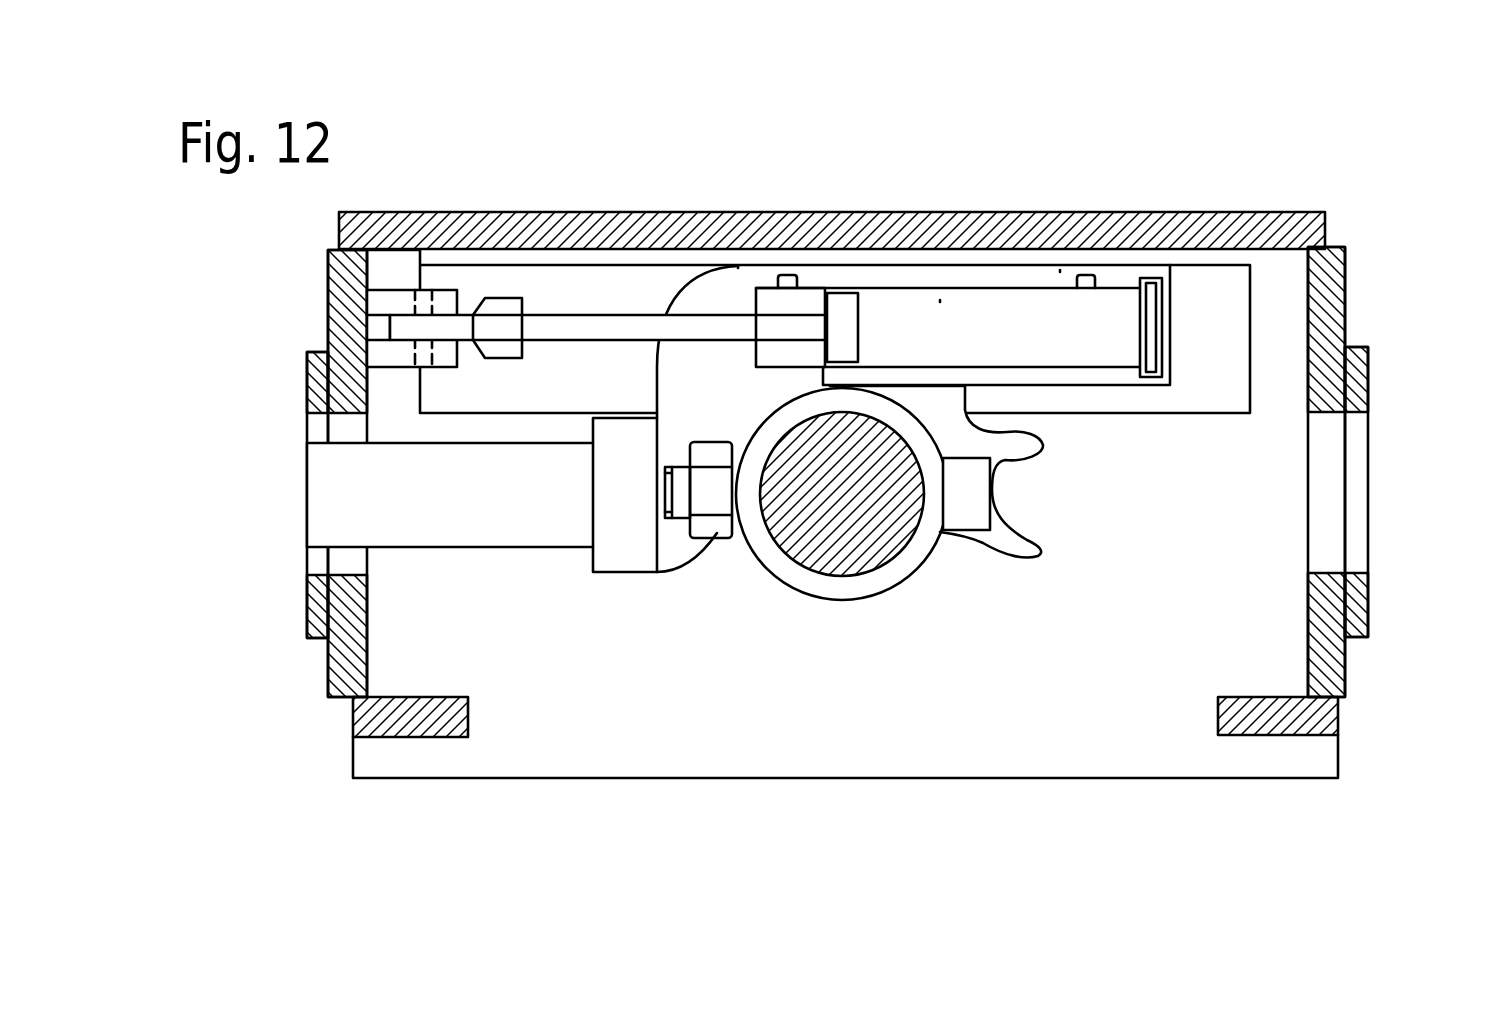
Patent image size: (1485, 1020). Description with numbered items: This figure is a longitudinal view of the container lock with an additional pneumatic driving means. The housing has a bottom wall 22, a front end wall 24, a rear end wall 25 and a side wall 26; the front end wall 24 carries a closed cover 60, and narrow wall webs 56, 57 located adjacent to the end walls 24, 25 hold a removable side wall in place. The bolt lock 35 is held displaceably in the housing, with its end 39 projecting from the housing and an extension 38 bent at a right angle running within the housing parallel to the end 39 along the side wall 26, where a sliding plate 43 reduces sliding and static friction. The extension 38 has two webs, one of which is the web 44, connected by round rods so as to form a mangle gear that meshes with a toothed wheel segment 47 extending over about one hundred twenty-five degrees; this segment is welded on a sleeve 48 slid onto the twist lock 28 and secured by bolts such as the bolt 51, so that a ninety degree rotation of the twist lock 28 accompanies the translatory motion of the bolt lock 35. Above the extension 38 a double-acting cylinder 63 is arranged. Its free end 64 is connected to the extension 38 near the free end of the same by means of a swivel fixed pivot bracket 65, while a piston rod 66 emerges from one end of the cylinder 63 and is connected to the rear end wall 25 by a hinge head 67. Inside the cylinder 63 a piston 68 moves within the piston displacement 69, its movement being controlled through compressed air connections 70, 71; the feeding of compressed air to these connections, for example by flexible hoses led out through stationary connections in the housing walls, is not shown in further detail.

The bottom wall 22 is at (995, 785).
The front end wall 24 is at (1337, 300).
The rear end wall 25 is at (343, 650).
The side wall 26 is at (533, 228).
The twist lock 28 is at (832, 507).
The bolt lock 35 is at (555, 532).
The extension 38 is at (737, 287).
The end of the bolt lock 39 is at (317, 502).
The sliding plate 43 is at (713, 257).
The web 44 is at (1060, 273).
The toothed wheel segment 47 is at (1002, 455).
The sleeve 48 is at (878, 580).
The bolt 51 is at (970, 517).
The wall web 56 is at (398, 780).
The wall web 57 is at (1275, 725).
The closed cover 60 is at (1367, 387).
The double-acting cylinder 63 is at (928, 287).
The free end of the cylinder 64 is at (1127, 303).
The swivel fixed pivot bracket 65 is at (1157, 318).
The piston rod 66 is at (640, 325).
The hinge head 67 is at (461, 330).
The piston 68 is at (842, 300).
The piston displacement 69 is at (987, 315).
The compressed air connection 70 is at (787, 273).
The compressed air connection 71 is at (1090, 277).